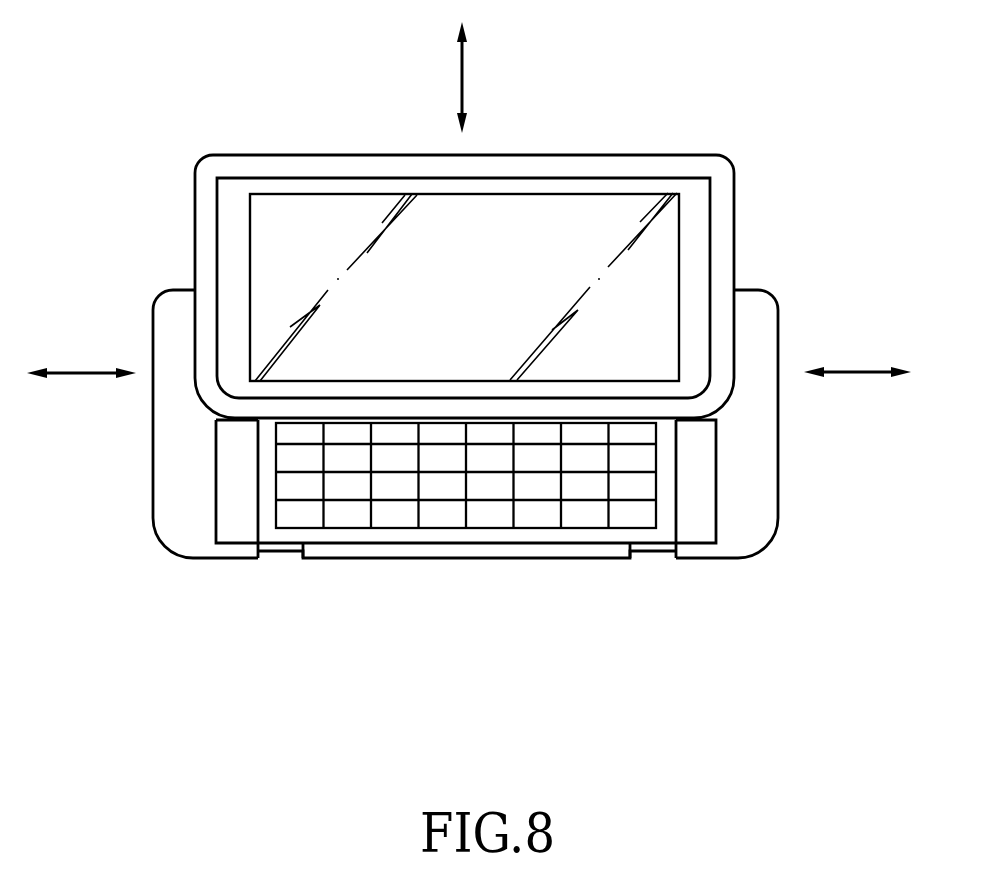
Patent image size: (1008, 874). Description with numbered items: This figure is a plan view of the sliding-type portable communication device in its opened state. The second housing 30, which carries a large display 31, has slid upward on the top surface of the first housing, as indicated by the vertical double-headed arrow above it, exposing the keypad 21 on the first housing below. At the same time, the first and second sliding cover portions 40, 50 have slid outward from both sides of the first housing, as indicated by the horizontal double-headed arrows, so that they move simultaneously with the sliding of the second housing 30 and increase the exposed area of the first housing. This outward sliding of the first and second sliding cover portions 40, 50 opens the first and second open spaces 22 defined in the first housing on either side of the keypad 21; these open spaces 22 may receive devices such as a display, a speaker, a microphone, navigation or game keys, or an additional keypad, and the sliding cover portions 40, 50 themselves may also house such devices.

The keypad 21 is at (492, 522).
The first and second open spaces 22 is at (237, 526).
The second housing 30 is at (343, 170).
The display 31 is at (562, 213).
The first sliding cover portion 40 is at (170, 455).
The second sliding cover portion 50 is at (757, 464).